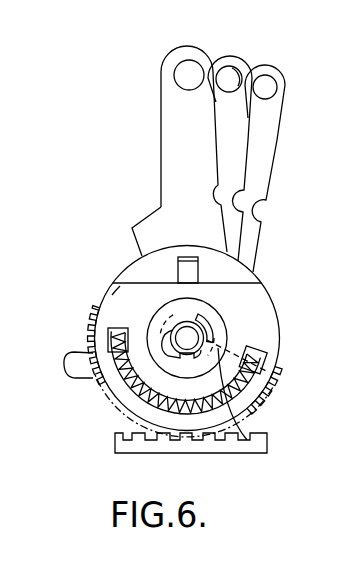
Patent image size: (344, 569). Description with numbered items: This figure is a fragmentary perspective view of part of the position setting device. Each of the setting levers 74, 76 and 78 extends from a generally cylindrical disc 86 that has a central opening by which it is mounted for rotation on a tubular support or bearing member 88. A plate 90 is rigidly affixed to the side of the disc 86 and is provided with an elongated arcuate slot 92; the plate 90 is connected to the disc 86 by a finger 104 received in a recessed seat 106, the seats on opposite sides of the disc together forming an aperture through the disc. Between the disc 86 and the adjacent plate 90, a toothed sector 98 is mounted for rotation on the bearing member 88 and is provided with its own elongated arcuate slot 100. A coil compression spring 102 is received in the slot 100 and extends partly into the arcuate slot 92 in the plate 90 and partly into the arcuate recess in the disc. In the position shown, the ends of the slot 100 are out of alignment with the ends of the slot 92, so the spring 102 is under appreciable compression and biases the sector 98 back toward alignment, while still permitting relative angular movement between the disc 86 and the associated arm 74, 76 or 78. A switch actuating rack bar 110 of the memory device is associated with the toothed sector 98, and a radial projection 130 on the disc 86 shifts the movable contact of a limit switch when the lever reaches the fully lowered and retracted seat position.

The lever 74 is at (170, 126).
The lever 76 is at (233, 52).
The lever 78 is at (284, 70).
The cylindrical disc 86 is at (127, 262).
The tubular support or bearing member 88 is at (203, 337).
The plate 90 is at (112, 295).
The elongated arcuate slot 92 is at (256, 375).
The toothed sector 98 is at (103, 384).
The elongated arcuate slot 100 is at (110, 334).
The coil compression spring 102 is at (247, 440).
The finger 104 is at (196, 271).
The recessed seat 106 is at (178, 272).
The switch actuating rack bar 110 is at (205, 451).
The radial projection 130 is at (67, 363).